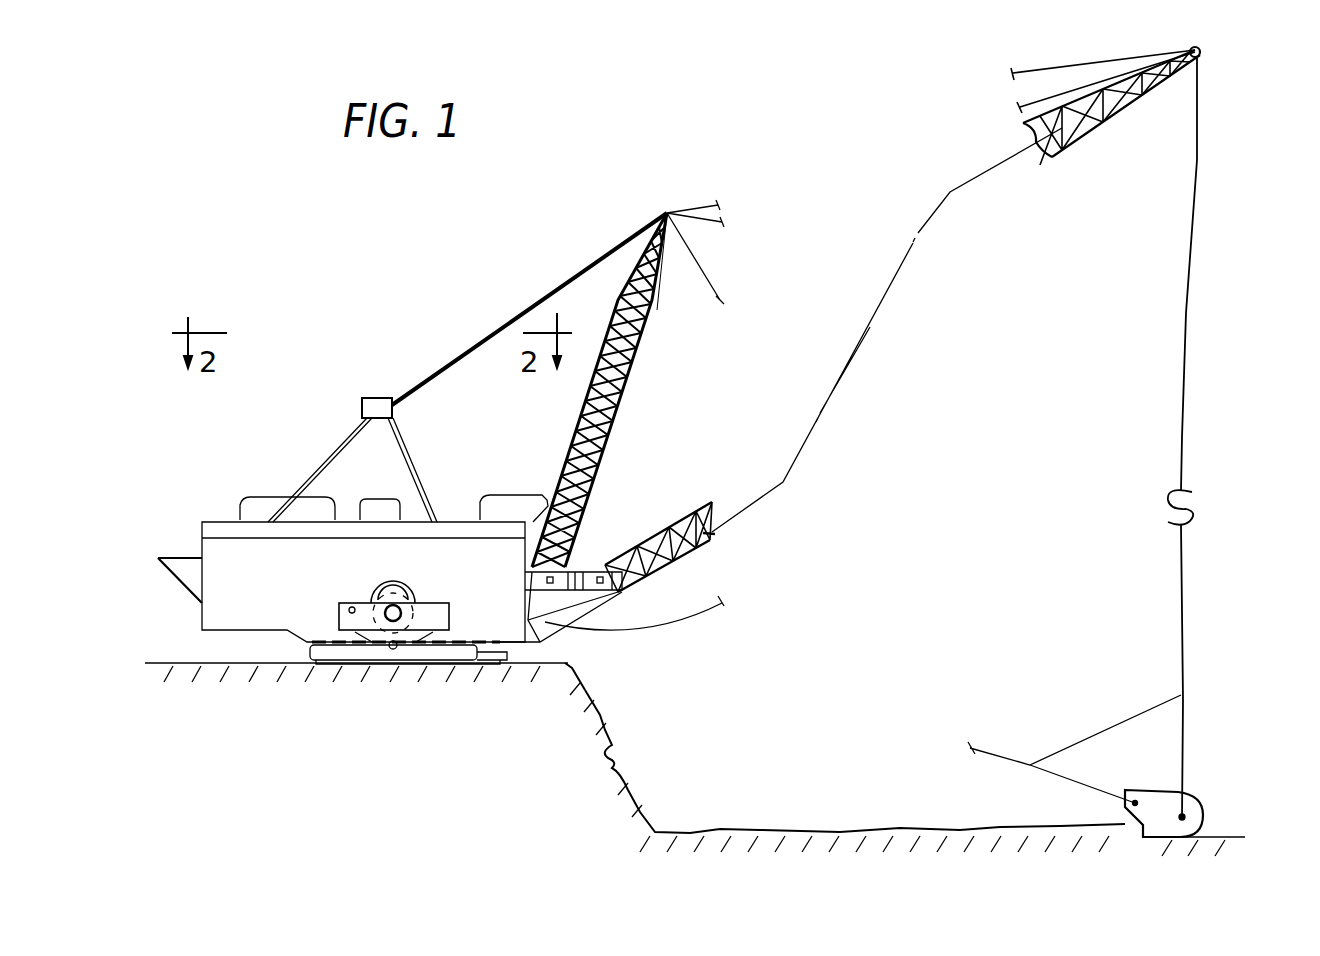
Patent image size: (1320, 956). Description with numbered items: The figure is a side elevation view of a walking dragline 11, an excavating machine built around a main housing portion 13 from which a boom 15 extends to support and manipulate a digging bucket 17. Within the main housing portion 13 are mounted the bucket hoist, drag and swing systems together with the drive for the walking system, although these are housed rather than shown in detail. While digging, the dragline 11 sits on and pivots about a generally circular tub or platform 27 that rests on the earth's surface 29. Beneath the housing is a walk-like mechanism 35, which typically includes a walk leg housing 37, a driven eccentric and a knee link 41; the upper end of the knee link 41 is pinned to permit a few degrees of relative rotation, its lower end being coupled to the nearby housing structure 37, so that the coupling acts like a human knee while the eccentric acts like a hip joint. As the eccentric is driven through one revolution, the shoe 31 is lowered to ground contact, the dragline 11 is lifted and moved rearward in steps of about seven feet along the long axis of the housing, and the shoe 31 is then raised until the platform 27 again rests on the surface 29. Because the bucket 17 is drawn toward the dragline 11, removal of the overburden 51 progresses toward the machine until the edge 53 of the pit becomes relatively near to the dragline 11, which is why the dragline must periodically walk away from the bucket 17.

The walking dragline 11 is at (333, 398).
The main housing portion 13 is at (218, 550).
The boom 15 is at (685, 513).
The digging bucket 17 is at (1198, 798).
The tub 27 is at (525, 655).
The earth's surface 29 is at (185, 658).
The shoe 31 is at (323, 650).
The walk-like mechanism 35 is at (321, 587).
The walk leg housing 37 is at (339, 614).
The knee link 41 is at (368, 600).
The overburden 51 is at (603, 730).
The edge of the pit 53 is at (570, 670).